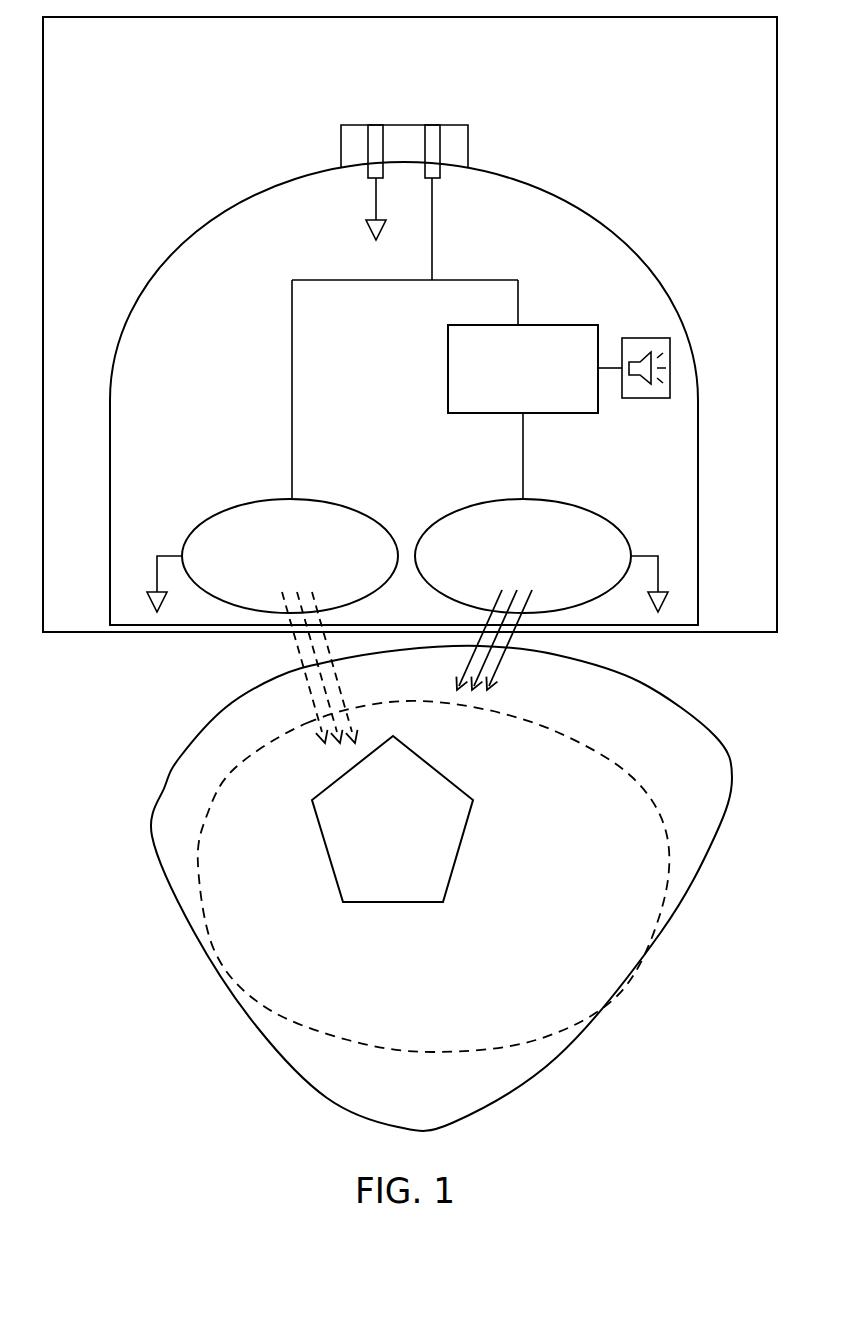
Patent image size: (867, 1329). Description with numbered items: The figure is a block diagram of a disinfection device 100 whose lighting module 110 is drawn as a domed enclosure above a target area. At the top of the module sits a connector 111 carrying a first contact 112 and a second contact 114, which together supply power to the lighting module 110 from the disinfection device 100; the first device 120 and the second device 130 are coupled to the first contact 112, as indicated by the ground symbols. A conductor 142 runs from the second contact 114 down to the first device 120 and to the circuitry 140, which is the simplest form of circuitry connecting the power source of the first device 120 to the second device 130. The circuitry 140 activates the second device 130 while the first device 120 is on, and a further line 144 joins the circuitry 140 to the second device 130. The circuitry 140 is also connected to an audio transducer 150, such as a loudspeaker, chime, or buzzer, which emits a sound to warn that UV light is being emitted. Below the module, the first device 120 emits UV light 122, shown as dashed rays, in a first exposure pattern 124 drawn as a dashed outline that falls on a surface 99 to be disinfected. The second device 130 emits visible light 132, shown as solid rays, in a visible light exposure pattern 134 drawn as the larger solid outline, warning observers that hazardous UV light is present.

The disinfection device 100 is at (112, 57).
The lighting module 110 is at (174, 342).
The connector 111 is at (456, 118).
The first contact 112 is at (377, 157).
The second contact 114 is at (433, 155).
The conductor 142 is at (433, 280).
The circuitry 140 is at (532, 407).
The audio transducer 150 is at (668, 348).
The connection line 144 is at (525, 463).
The first device 120 is at (269, 584).
The second device 130 is at (502, 584).
The UV light 122 is at (280, 652).
The visible light 132 is at (525, 642).
The visible light exposure pattern 134 is at (684, 733).
The first exposure pattern 124 is at (238, 796).
The surface 99 is at (372, 854).